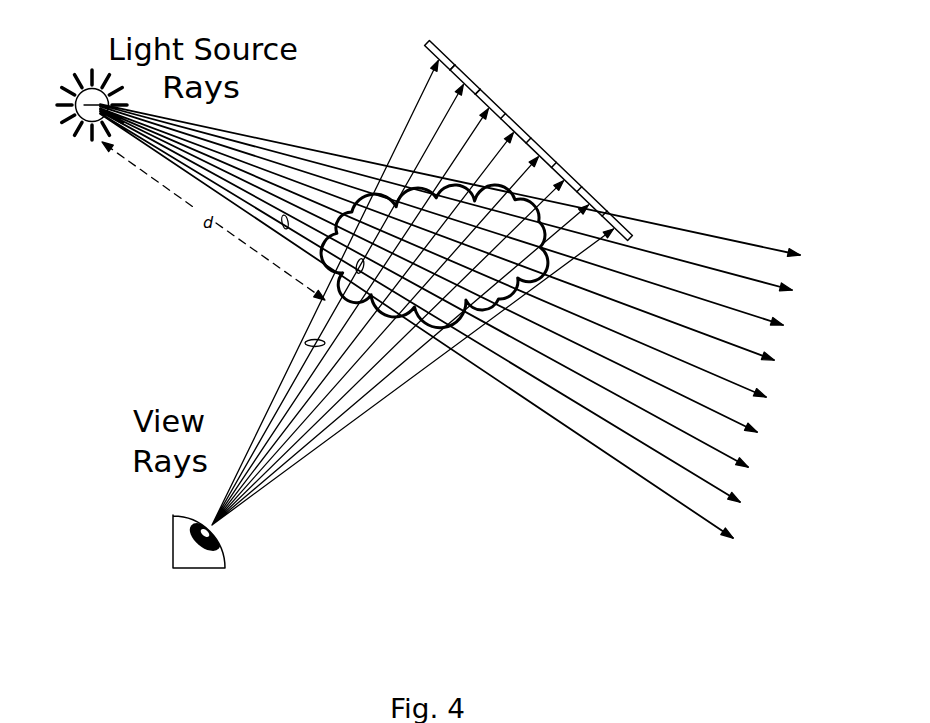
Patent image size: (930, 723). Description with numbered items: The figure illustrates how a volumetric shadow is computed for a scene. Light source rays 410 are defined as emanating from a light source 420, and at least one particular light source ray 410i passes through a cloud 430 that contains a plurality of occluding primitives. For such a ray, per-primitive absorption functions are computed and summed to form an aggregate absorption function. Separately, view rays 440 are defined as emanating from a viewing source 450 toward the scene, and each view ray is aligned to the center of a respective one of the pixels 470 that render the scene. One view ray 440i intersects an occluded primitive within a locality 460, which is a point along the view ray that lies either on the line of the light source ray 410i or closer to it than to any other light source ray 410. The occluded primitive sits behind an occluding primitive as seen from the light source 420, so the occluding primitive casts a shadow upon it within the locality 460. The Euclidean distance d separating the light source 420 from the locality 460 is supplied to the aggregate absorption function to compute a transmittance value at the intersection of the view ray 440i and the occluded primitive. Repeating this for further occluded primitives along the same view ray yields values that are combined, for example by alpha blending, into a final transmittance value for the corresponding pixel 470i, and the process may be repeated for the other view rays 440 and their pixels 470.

The light source rays 410 is at (450, 321).
The light source ray 410i is at (288, 215).
The light source 420 is at (80, 100).
The cloud 430 is at (437, 320).
The view rays 440 is at (412, 301).
The view ray 440i is at (305, 344).
The viewing source 450 is at (199, 559).
The locality 460 is at (362, 260).
The pixels 470 is at (529, 141).
The pixel 470i is at (467, 81).